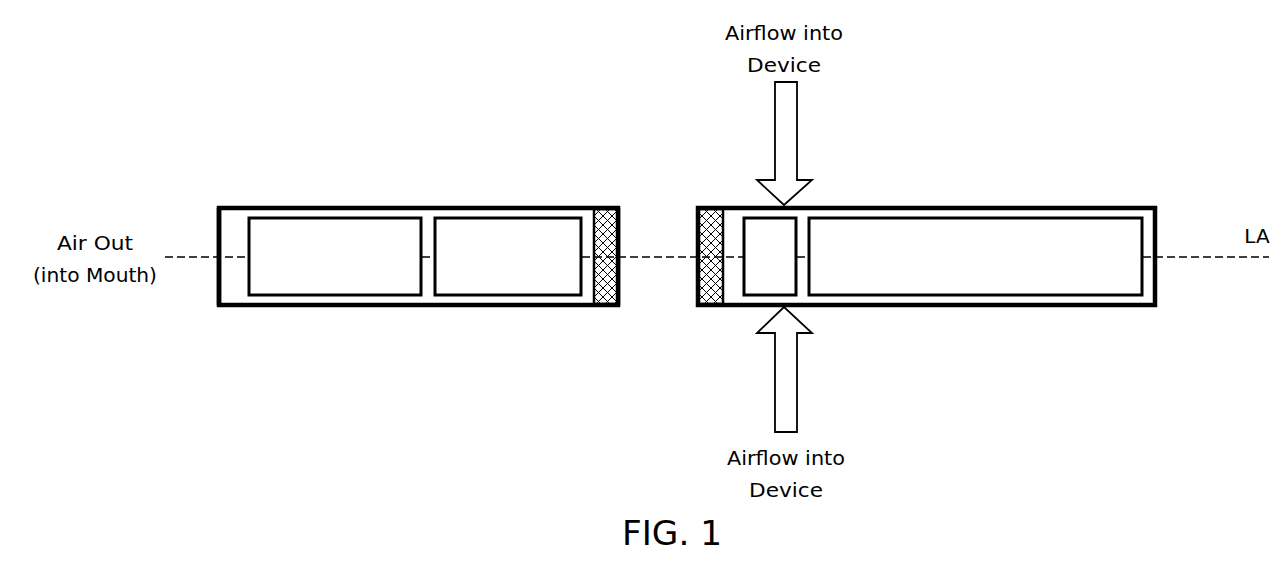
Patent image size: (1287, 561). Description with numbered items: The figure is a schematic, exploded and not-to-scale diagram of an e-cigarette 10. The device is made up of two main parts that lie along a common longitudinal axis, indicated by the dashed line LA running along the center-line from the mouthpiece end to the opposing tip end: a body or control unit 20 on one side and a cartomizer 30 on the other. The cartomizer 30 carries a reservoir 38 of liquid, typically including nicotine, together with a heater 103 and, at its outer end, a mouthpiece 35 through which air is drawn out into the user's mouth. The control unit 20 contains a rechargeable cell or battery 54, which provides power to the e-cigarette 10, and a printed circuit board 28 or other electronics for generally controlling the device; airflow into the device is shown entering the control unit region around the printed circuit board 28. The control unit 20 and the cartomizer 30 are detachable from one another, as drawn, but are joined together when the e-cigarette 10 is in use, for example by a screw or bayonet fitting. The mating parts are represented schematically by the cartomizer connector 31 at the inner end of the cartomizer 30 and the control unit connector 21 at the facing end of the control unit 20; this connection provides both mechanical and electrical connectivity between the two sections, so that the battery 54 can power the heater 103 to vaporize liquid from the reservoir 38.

The e-cigarette 10 is at (262, 403).
The control unit 20 is at (985, 308).
The control unit connector 21 is at (715, 306).
The printed circuit board 28 is at (762, 238).
The cartomizer 30 is at (418, 205).
The cartomizer connector 31 is at (605, 205).
The mouthpiece 35 is at (217, 228).
The reservoir 38 is at (335, 256).
The battery 54 is at (975, 256).
The heater 103 is at (508, 256).